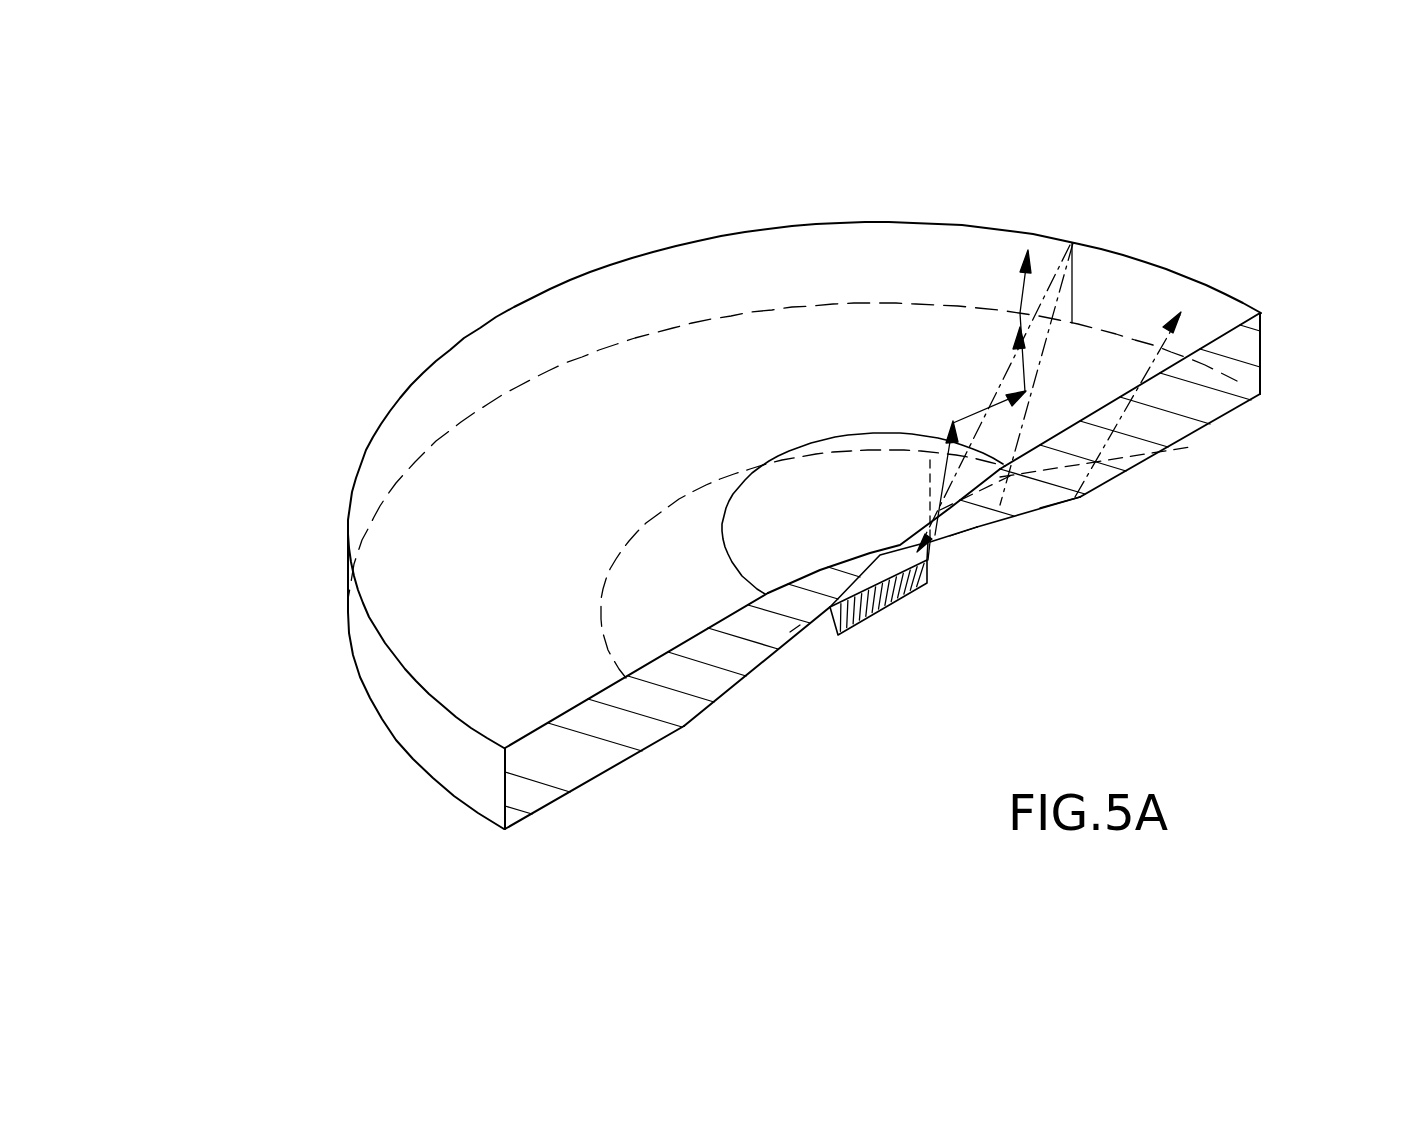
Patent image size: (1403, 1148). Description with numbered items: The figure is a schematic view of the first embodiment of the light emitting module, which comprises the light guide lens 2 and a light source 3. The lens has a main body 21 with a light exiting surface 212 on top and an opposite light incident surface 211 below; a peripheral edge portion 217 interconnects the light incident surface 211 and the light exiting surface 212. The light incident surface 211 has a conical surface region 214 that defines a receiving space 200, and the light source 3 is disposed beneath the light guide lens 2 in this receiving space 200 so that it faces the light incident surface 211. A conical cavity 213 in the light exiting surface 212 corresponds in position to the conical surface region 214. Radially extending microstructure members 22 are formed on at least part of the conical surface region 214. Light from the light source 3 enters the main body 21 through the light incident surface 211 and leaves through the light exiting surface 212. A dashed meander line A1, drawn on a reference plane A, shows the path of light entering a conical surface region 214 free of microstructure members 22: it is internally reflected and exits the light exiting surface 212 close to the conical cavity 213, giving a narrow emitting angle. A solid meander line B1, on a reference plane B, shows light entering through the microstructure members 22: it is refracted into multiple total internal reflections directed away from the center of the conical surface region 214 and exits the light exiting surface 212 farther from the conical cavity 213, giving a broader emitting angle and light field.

The light guide lens 2 is at (795, 491).
The light source 3 is at (897, 593).
The main body 21 is at (390, 411).
The microstructure members 22 is at (950, 545).
The receiving space 200 is at (767, 671).
The light incident surface 211 is at (1040, 508).
The light exiting surface 212 is at (760, 240).
The conical cavity 213 is at (727, 541).
The conical surface region 214 is at (945, 550).
The peripheral edge portion 217 is at (405, 720).
The reference plane A is at (1243, 355).
The dashed meander line A1 is at (1147, 452).
The reference plane B is at (1065, 283).
The solid meander line B1 is at (1020, 287).